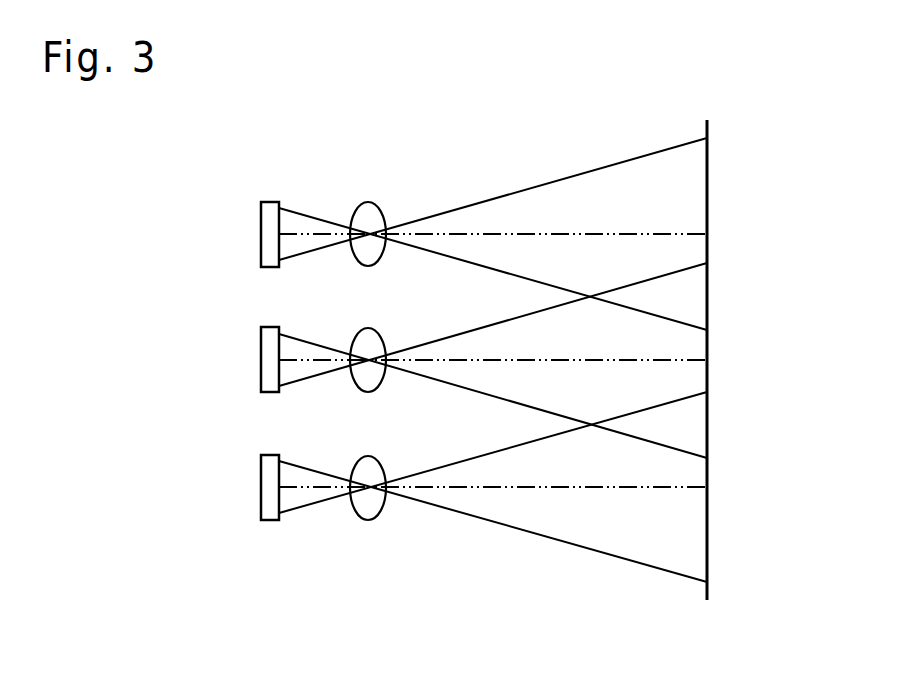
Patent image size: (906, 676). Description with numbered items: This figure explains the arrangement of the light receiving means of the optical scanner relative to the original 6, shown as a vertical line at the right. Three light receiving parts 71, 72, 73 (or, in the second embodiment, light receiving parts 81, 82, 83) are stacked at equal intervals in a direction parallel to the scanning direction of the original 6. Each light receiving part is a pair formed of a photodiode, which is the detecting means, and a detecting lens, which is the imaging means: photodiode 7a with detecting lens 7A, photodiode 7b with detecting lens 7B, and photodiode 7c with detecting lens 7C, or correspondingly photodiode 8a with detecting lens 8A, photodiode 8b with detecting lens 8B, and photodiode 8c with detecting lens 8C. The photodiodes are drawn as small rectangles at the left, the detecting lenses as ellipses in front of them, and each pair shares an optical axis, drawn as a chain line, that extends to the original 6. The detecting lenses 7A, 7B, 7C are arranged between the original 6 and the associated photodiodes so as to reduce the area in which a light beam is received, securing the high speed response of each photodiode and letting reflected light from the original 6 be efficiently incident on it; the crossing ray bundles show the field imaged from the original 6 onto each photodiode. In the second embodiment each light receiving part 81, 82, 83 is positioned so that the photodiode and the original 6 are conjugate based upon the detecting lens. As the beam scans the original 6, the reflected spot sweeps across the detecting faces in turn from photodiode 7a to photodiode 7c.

The original 6 is at (709, 193).
The light receiving part 71 is at (114, 200).
The light receiving part 81 is at (164, 200).
The photodiode 7a is at (270, 218).
The photodiode 8a is at (270, 234).
The detecting lens 7A is at (403, 211).
The detecting lens 8A is at (367, 219).
The light receiving part 72 is at (121, 342).
The light receiving part 82 is at (171, 342).
The photodiode 7b is at (270, 343).
The photodiode 8b is at (270, 359).
The detecting lens 7B is at (403, 339).
The detecting lens 8B is at (367, 346).
The light receiving part 73 is at (119, 468).
The light receiving part 83 is at (169, 468).
The photodiode 7c is at (270, 470).
The photodiode 8c is at (270, 487).
The detecting lens 7C is at (404, 466).
The detecting lens 8C is at (367, 474).